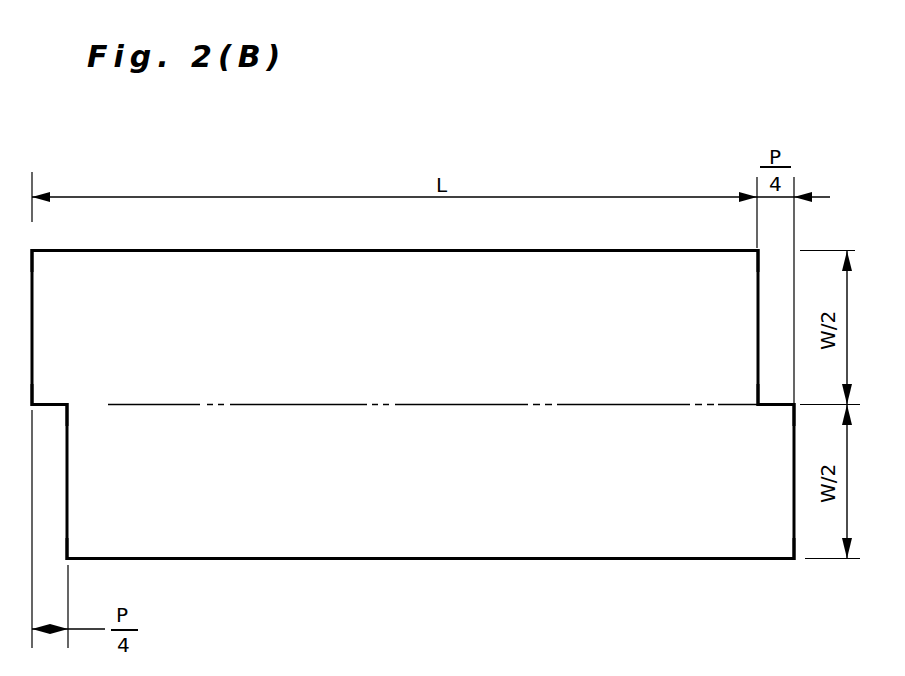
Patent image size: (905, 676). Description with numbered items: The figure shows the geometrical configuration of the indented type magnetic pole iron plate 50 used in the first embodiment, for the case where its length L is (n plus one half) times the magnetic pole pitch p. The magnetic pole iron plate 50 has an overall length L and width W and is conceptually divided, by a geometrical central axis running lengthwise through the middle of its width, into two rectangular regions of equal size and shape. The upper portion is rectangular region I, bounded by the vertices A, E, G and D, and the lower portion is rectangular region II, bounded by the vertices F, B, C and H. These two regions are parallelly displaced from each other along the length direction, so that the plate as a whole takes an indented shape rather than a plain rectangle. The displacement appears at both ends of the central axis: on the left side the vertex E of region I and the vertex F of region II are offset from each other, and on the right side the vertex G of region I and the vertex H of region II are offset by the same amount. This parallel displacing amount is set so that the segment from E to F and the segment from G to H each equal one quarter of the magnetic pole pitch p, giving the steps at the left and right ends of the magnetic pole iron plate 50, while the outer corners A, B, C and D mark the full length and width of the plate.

The magnetic pole iron plate 50 is at (578, 165).
The vertex A is at (43, 250).
The vertex B is at (78, 564).
The vertex C is at (789, 563).
The vertex D is at (755, 250).
The vertex E is at (41, 394).
The vertex F is at (65, 404).
The vertex G is at (763, 408).
The vertex H is at (785, 404).